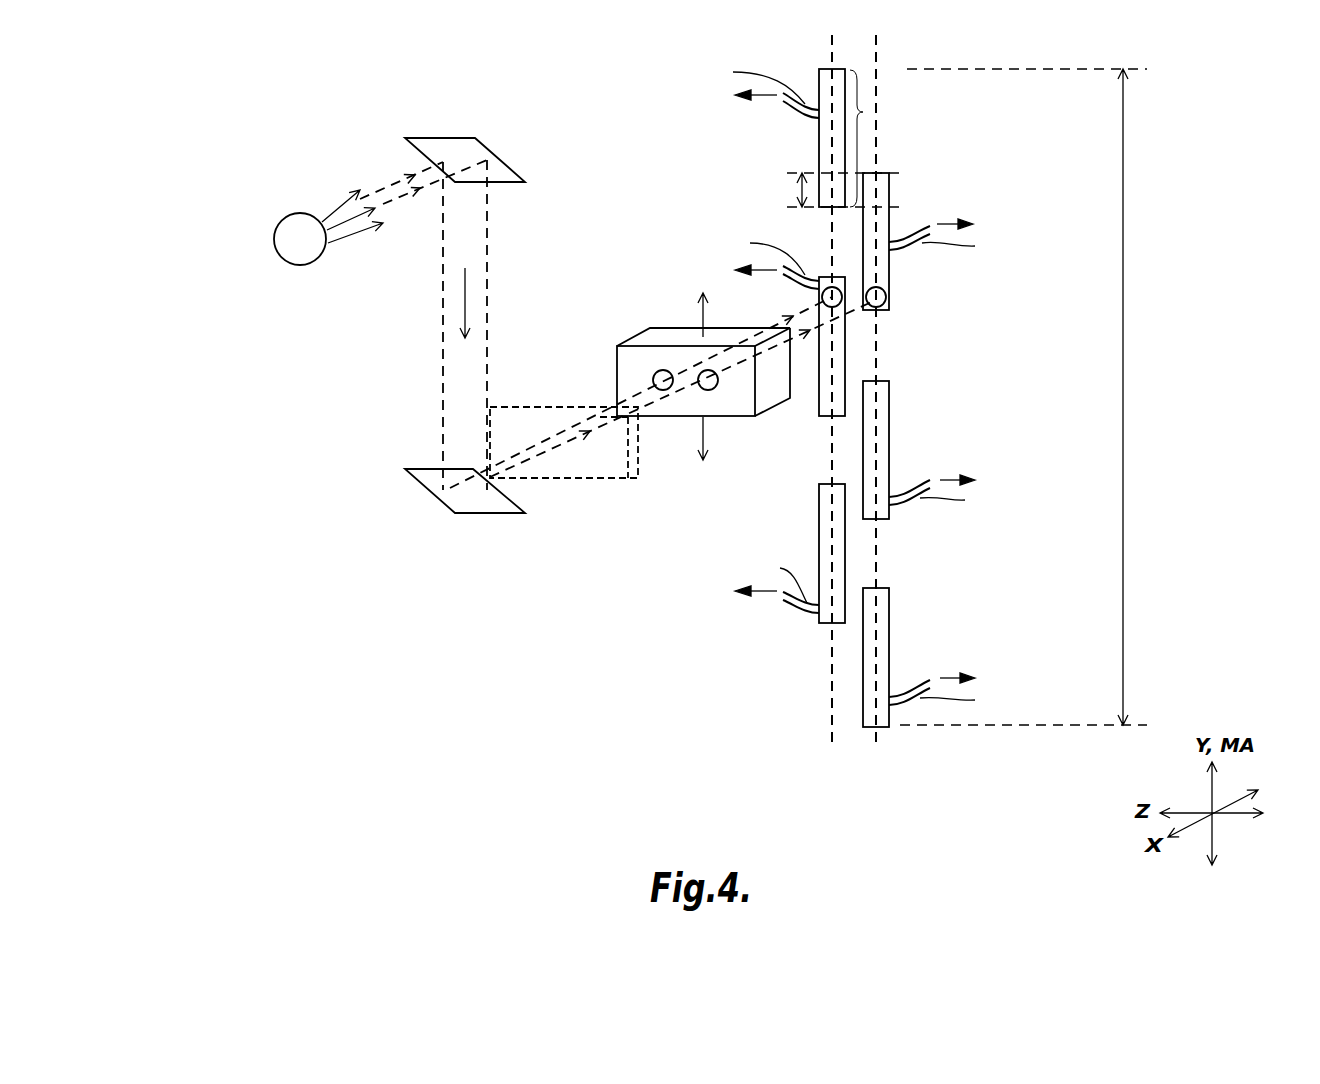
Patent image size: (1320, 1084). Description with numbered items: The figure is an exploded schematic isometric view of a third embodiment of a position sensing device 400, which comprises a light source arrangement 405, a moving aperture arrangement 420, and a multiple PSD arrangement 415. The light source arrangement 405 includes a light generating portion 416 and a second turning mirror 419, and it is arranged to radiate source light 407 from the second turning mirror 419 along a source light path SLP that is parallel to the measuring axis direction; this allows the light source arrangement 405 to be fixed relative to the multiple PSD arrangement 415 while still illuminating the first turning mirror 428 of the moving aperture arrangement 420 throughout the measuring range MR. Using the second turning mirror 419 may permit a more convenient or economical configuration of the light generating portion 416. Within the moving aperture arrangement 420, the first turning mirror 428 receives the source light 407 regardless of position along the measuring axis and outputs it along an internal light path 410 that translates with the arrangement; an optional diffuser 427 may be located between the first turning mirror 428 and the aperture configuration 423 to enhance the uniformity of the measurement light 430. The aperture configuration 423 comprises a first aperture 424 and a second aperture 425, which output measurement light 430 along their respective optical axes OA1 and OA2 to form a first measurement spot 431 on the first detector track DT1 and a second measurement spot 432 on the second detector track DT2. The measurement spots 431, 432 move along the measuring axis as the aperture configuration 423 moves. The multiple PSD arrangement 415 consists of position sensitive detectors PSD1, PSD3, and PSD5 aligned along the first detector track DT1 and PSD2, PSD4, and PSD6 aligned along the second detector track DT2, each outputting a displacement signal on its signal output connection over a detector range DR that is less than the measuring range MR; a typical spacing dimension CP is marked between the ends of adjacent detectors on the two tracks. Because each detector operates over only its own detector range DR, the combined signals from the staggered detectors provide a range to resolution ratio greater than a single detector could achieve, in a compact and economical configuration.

The position sensing device 400 is at (1087, 397).
The light source arrangement 405 is at (345, 278).
The source light 407 is at (397, 192).
The internal light path 410 is at (590, 432).
The multiple PSD arrangement 415 is at (852, 436).
The light generating portion 416 is at (283, 262).
The second turning mirror 419 is at (477, 143).
The moving aperture arrangement 420 is at (561, 488).
The aperture configuration 423 is at (668, 470).
The first aperture 424 is at (657, 391).
The second aperture 425 is at (702, 391).
The diffuser 427 is at (593, 467).
The first turning mirror 428 is at (468, 495).
The measurement light 430 is at (813, 339).
The first measurement spot 431 is at (822, 297).
The second measurement spot 432 is at (886, 285).
The source light path SLP is at (466, 296).
The optical axis of the first aperture OA1 is at (635, 393).
The optical axis of the second aperture OA2 is at (692, 385).
The first detector track DT1 is at (836, 735).
The second detector track DT2 is at (873, 735).
The measuring range MR is at (1123, 228).
The detector range DR is at (864, 112).
The detector overlap CP is at (802, 182).
The position sensitive detector PSD1 is at (819, 130).
The position sensitive detector PSD2 is at (889, 180).
The position sensitive detector PSD3 is at (819, 404).
The position sensitive detector PSD4 is at (889, 440).
The position sensitive detector 5 PSD5 is at (819, 542).
The position sensitive detector 6 PSD6 is at (889, 627).